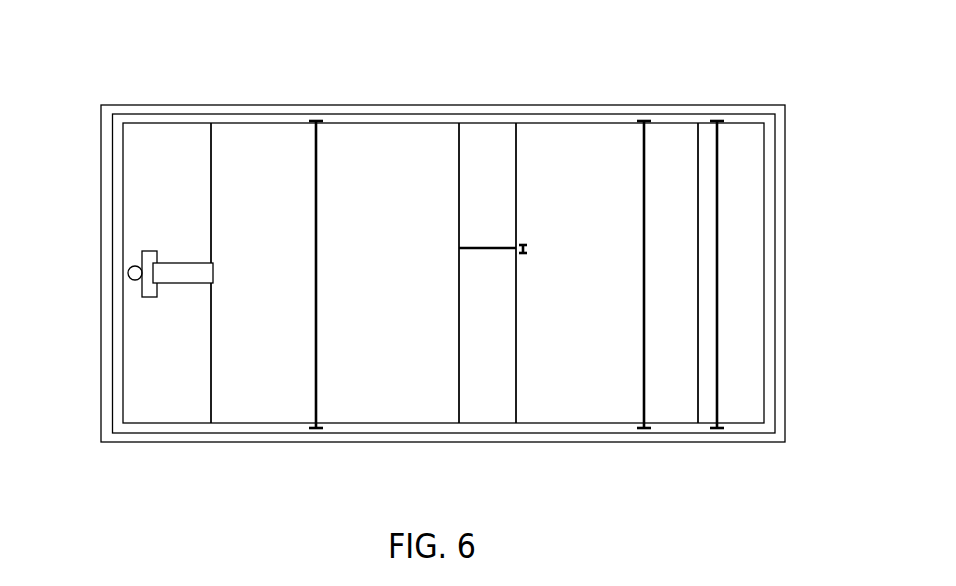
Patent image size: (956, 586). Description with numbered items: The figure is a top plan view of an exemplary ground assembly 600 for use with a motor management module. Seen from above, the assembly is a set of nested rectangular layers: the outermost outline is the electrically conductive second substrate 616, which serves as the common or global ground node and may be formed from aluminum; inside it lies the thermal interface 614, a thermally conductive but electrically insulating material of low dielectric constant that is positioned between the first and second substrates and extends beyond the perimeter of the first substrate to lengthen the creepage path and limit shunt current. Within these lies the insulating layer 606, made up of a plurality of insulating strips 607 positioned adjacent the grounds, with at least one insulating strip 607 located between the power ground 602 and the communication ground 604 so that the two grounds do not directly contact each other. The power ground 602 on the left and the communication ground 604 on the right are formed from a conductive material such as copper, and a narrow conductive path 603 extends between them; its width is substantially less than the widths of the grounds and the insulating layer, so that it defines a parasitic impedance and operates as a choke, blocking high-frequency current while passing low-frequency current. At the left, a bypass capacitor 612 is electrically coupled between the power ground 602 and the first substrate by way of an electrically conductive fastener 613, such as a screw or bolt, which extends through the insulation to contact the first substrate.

The ground assembly 600 is at (146, 73).
The power ground 602 is at (277, 143).
The conductive path 603 is at (475, 247).
The communication ground 604 is at (593, 143).
The insulating layer 606 is at (489, 140).
The insulating strip 607 is at (747, 143).
The bypass capacitor 612 is at (197, 263).
The electrically conductive fastener 613 is at (131, 267).
The thermal interface 614 is at (769, 283).
The second substrate 616 is at (782, 440).